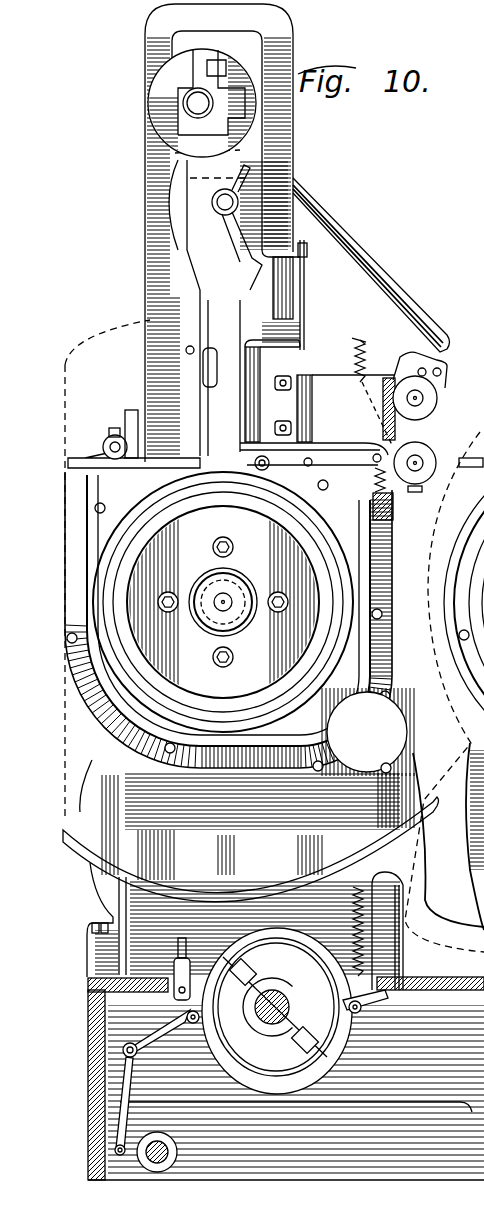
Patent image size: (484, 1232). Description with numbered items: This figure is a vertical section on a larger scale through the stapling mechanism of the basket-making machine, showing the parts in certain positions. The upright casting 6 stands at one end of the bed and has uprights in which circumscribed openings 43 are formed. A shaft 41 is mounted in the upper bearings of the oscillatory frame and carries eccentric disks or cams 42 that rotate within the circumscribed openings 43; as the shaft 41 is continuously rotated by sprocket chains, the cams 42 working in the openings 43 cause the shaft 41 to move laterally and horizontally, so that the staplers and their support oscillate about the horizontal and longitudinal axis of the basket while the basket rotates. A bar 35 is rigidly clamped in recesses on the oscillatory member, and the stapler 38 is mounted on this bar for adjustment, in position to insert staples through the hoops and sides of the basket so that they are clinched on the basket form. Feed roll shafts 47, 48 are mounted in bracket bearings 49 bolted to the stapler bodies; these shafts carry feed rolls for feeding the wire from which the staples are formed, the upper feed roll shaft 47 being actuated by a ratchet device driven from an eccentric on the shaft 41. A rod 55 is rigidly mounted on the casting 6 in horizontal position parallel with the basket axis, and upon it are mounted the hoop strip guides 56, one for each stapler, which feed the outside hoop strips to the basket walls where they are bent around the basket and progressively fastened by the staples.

The circumscribed opening 43 is at (243, 53).
The shaft 41 is at (189, 98).
The eccentric disk 42 is at (255, 118).
The stapler 38 is at (227, 227).
The bar 35 is at (292, 281).
The bracket bearing 49 is at (330, 387).
The upper feed roll shaft 47 is at (418, 400).
The feed roll shaft 48 is at (418, 462).
The rod 55 is at (115, 434).
The hoop strip guide 56 is at (82, 458).
The upright casting 6 is at (372, 808).